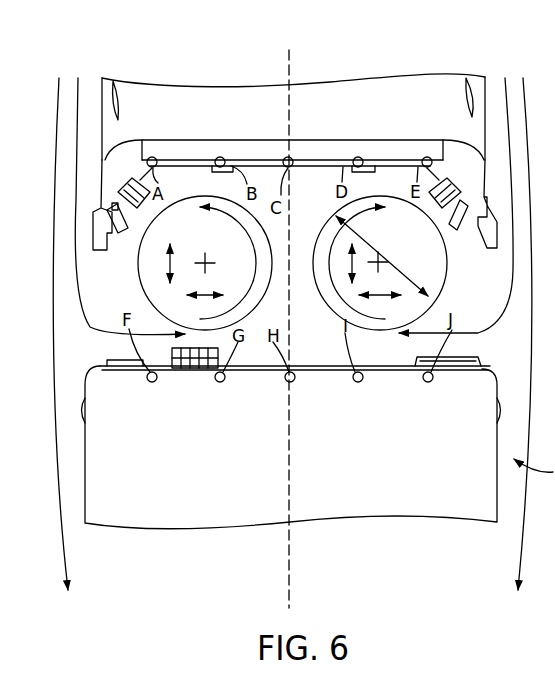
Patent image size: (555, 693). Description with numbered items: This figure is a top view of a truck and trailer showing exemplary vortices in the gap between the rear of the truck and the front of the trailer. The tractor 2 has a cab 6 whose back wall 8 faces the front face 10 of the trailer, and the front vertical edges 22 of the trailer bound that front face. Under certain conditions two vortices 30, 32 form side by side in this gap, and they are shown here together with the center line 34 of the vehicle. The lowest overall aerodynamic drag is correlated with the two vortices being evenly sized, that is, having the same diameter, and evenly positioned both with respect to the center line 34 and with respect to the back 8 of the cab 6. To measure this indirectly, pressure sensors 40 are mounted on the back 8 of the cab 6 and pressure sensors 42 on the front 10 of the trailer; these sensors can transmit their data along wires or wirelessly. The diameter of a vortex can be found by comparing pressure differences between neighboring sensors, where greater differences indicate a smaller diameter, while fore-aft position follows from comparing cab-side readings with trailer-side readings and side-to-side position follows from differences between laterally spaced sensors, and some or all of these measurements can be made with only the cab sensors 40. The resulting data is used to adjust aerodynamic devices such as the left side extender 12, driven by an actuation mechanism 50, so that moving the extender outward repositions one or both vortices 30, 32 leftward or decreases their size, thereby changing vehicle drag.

The tractor 2 is at (316, 60).
The cab 6 is at (410, 80).
The back wall of the cab 8 is at (316, 166).
The front face of the trailer 10 is at (323, 366).
The left side extender 12 is at (106, 212).
The front vertical edges of the trailer 22 is at (494, 368).
The vortex 30 is at (230, 240).
The vortex 32 is at (426, 239).
The center line 34 is at (289, 299).
The pressure sensors 40 is at (166, 156).
The pressure sensors 42 is at (159, 388).
The actuation mechanism 50 is at (137, 233).